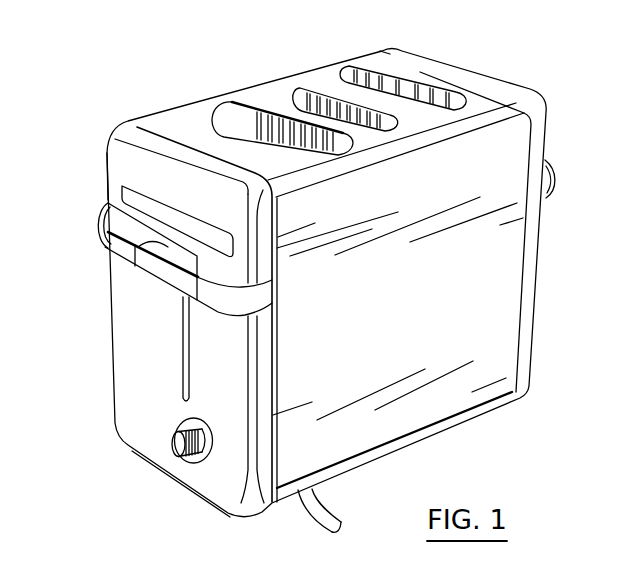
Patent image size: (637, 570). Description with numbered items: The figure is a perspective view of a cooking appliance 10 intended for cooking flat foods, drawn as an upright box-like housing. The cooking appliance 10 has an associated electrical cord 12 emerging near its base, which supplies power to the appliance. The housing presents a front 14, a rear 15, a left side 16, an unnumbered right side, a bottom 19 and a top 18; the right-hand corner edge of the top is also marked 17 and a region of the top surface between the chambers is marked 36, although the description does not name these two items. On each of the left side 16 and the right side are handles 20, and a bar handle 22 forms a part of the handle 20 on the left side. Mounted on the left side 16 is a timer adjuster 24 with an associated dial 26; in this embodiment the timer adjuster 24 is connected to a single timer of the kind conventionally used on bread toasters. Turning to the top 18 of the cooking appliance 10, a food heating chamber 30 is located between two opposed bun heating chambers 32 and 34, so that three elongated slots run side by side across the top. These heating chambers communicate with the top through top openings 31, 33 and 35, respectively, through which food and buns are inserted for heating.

The cooking appliance 10 is at (460, 435).
The electrical cord 12 is at (332, 512).
The front 14 is at (408, 287).
The rear 15 is at (98, 264).
The left side 16 is at (154, 335).
The top rim 17 is at (477, 69).
The top 18 is at (177, 118).
The bottom 19 is at (277, 517).
The handle 20 is at (100, 228).
The bar handle 22 is at (130, 349).
The timer adjuster 24 is at (173, 438).
The dial 26 is at (205, 435).
The food heating chamber 30 is at (310, 100).
The top opening 31 is at (300, 90).
The bun heating chamber 32 is at (390, 82).
The top opening 33 is at (357, 70).
The bun heating chamber 34 is at (230, 110).
The top opening 35 is at (313, 155).
The top surface 36 is at (404, 112).